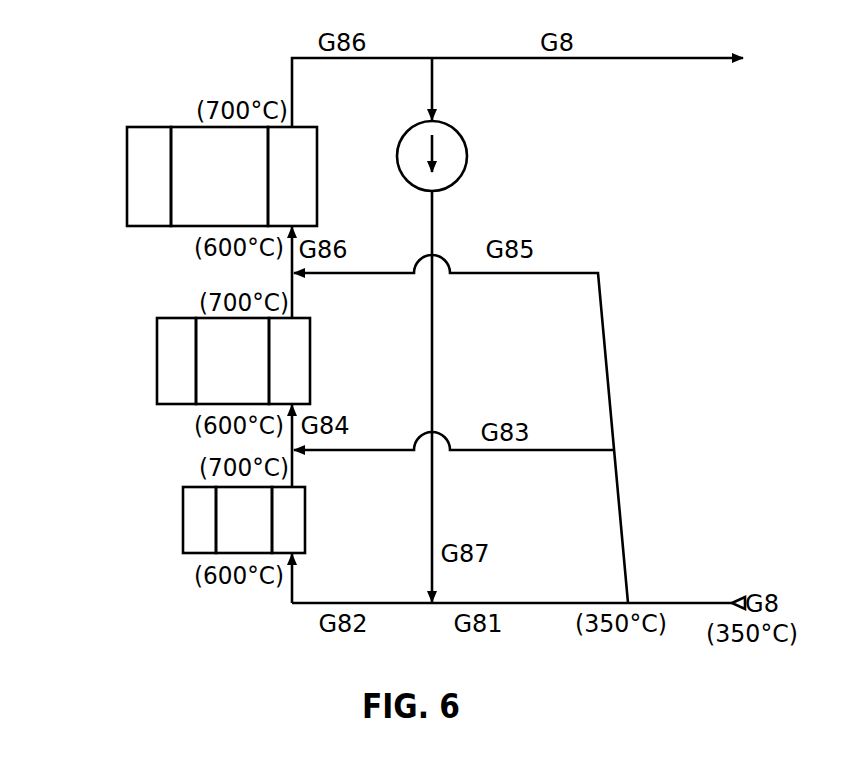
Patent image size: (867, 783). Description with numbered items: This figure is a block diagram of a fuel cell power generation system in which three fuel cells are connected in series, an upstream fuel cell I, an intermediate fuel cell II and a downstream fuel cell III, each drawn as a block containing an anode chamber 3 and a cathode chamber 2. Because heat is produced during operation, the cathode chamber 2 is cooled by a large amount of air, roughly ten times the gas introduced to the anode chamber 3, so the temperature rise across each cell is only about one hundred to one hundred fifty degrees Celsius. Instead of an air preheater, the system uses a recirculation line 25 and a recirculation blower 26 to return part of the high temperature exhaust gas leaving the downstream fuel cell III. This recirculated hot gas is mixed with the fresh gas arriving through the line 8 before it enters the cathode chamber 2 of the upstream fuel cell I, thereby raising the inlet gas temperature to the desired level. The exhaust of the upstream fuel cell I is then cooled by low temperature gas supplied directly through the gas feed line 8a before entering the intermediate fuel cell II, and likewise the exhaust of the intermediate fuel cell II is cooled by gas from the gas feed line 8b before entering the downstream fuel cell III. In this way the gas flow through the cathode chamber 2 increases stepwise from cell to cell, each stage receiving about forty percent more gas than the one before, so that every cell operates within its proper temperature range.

The cathode chamber 2 is at (316, 173).
The anode chamber 3 is at (128, 162).
The line 8 is at (559, 606).
The gas feed line 8a is at (563, 450).
The gas feed line 8b is at (560, 273).
The recirculation line 25 is at (434, 218).
The recirculation blower 26 is at (457, 129).
The upstream fuel cell I is at (213, 462).
The intermediate fuel cell II is at (214, 290).
The downstream fuel cell III is at (190, 112).